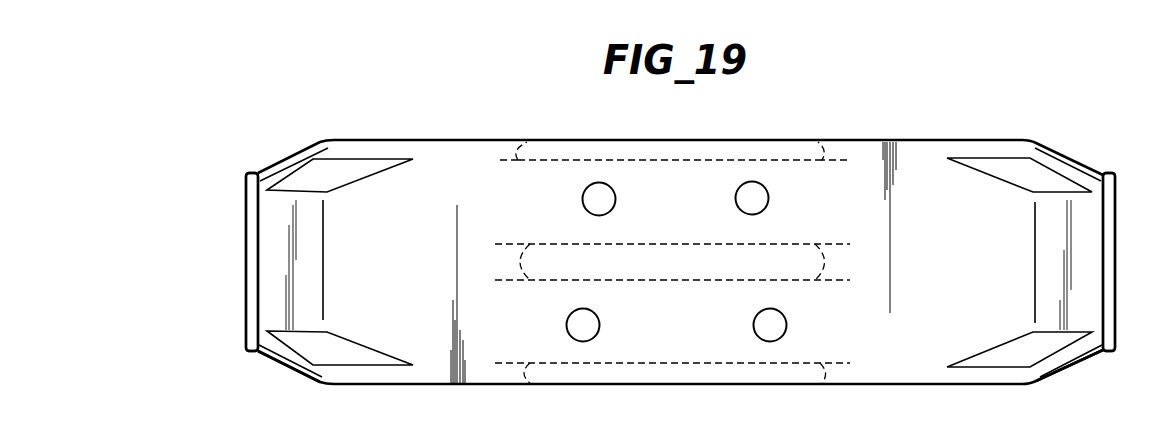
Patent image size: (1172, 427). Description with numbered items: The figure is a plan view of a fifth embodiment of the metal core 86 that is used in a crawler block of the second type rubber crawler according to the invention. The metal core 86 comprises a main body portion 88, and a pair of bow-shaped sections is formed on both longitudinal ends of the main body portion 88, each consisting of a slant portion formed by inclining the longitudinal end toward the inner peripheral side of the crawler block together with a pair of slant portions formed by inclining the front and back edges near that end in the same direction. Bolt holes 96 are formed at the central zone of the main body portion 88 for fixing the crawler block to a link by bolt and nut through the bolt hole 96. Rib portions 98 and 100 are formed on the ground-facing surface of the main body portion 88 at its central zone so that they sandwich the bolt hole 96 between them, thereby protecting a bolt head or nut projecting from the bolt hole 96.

The metal core 86 is at (870, 141).
The main body portion 88 is at (479, 140).
The bolt hole 96 is at (747, 195).
The rib portion 98 is at (589, 148).
The rib portion 100 is at (535, 278).